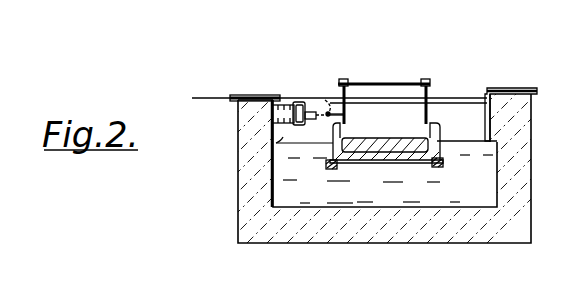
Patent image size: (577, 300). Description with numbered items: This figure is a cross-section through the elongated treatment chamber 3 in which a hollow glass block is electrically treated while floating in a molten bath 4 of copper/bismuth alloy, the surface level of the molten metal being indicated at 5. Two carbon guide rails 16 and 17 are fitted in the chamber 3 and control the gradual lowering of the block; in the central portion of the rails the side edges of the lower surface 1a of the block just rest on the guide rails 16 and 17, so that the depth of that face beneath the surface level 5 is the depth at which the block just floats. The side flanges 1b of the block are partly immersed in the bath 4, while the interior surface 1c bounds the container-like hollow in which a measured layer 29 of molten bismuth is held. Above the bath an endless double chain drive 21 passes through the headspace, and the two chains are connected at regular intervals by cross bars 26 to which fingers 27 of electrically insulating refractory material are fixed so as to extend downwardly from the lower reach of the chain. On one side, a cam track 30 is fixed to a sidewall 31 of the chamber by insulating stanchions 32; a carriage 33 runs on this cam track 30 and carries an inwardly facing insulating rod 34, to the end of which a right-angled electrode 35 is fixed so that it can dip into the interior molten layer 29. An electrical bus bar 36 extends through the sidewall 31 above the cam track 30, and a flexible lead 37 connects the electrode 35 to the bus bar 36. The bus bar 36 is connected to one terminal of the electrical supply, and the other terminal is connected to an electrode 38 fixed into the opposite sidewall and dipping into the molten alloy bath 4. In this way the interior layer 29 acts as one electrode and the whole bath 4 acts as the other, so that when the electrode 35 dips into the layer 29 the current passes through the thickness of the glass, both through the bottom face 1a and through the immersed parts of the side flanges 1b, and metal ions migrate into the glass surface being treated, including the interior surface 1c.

The lower surface of the block 1a is at (376, 152).
The side flanges of the block 1b is at (438, 132).
The interior surface of the block 1c is at (405, 155).
The treatment chamber 3 is at (250, 226).
The molten bath 4 is at (284, 208).
The surface level of the molten metal 5 is at (276, 143).
The carbon guide rail 16 is at (333, 170).
The carbon guide rail 17 is at (441, 165).
The endless double chain drive 21 is at (341, 83).
The cross bar 26 is at (383, 82).
The finger 27 is at (432, 103).
The layer of molten bismuth 29 is at (413, 148).
The cam track 30 is at (297, 103).
The sidewall 31 is at (242, 128).
The insulating stanchion 32 is at (270, 101).
The carriage 33 is at (301, 102).
The insulating rod 34 is at (330, 117).
The right-angled electrode 35 is at (357, 117).
The electrical bus bar 36 is at (327, 98).
The flexible lead 37 is at (325, 100).
The electrode 38 is at (507, 93).